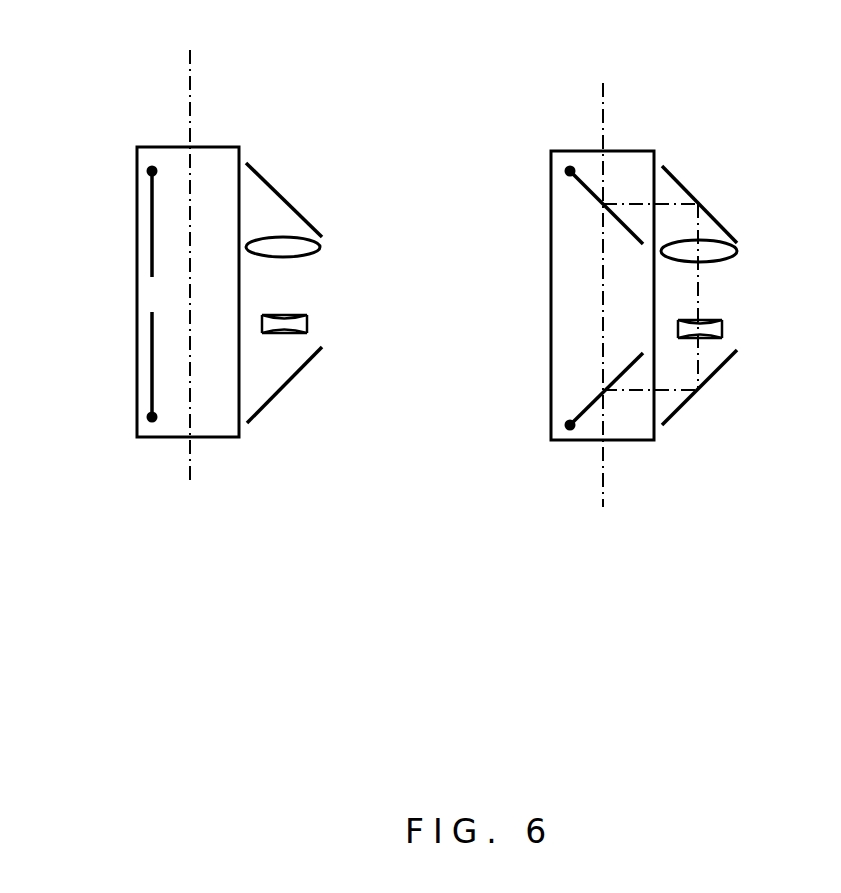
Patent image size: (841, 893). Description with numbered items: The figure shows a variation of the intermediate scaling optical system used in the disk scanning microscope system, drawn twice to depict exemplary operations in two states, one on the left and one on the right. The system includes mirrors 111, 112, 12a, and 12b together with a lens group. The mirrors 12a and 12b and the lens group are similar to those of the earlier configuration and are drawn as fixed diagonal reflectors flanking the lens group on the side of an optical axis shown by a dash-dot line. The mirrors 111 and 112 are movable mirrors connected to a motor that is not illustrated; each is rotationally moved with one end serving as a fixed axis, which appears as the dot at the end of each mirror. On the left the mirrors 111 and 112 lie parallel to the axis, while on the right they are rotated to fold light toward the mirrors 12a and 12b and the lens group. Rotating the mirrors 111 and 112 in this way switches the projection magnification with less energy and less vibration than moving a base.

The mirror 111 is at (152, 199).
The mirror 112 is at (152, 331).
The mirror 12a is at (268, 180).
The mirror 12b is at (289, 380).